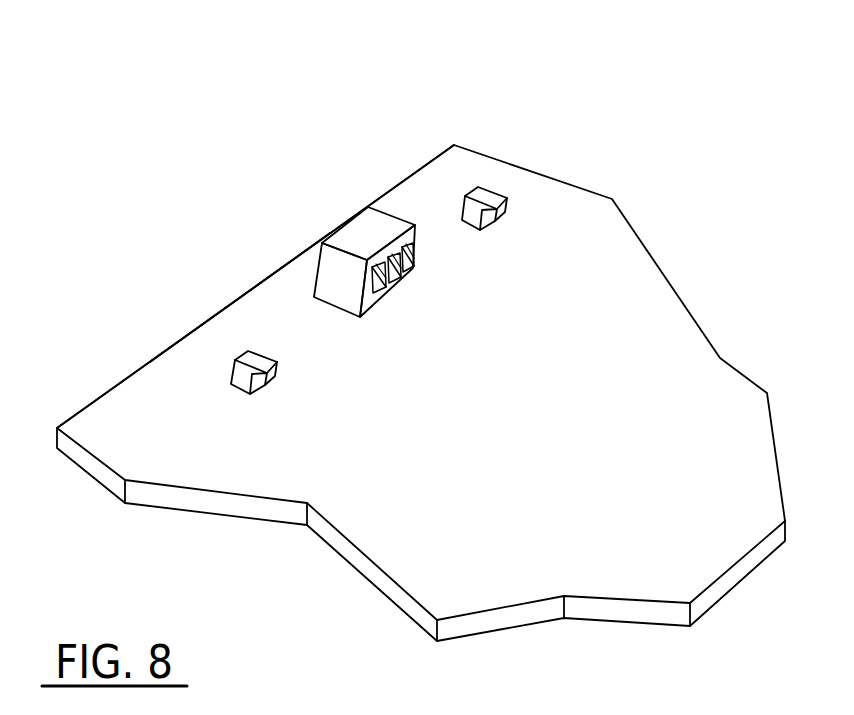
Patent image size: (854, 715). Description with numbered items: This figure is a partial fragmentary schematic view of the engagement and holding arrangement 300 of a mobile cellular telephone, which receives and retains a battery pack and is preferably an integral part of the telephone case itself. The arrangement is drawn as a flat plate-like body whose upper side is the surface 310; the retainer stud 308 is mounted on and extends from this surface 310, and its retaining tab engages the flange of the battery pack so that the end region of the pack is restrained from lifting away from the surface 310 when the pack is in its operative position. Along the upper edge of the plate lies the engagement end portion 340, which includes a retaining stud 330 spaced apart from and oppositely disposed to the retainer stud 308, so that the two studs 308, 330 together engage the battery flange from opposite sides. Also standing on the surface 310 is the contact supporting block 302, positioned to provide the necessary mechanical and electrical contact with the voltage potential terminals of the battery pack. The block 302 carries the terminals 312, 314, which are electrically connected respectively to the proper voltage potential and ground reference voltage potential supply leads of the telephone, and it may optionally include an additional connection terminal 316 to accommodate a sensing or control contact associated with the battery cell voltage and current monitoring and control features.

The engagement and holding arrangement 300 is at (358, 578).
The contact supporting block 302 is at (338, 224).
The retainer stud 308 is at (235, 360).
The surface of the engagement and holding arrangement 310 is at (551, 466).
The terminal 312 is at (421, 252).
The terminal 314 is at (400, 248).
The additional connection terminal 316 is at (372, 263).
The retaining stud 330 is at (487, 187).
The engagement end portion 340 is at (268, 262).